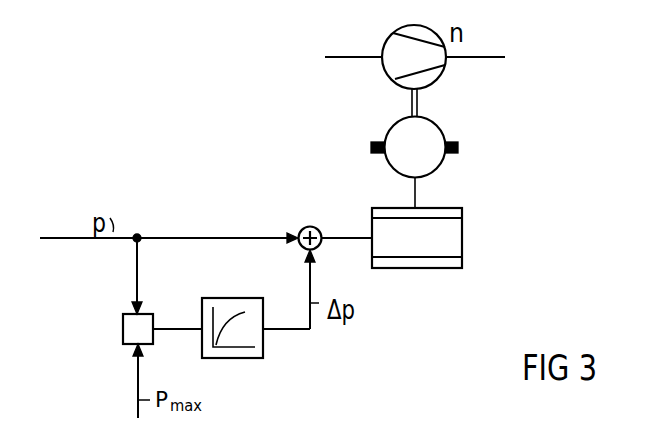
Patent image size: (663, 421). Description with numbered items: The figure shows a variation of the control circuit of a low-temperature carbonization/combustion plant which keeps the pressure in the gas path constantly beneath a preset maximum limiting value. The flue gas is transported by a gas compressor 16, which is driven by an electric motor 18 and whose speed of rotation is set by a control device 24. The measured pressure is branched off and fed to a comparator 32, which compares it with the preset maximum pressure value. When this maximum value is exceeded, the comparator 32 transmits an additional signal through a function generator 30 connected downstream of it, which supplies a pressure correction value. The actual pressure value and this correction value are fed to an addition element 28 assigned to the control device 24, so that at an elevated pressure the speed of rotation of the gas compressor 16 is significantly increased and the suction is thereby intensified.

The gas compressor 16 is at (385, 68).
The electric motor 18 is at (433, 170).
The control device 24 is at (463, 240).
The addition element 28 is at (313, 223).
The function generator 30 is at (223, 298).
The comparator 32 is at (123, 328).